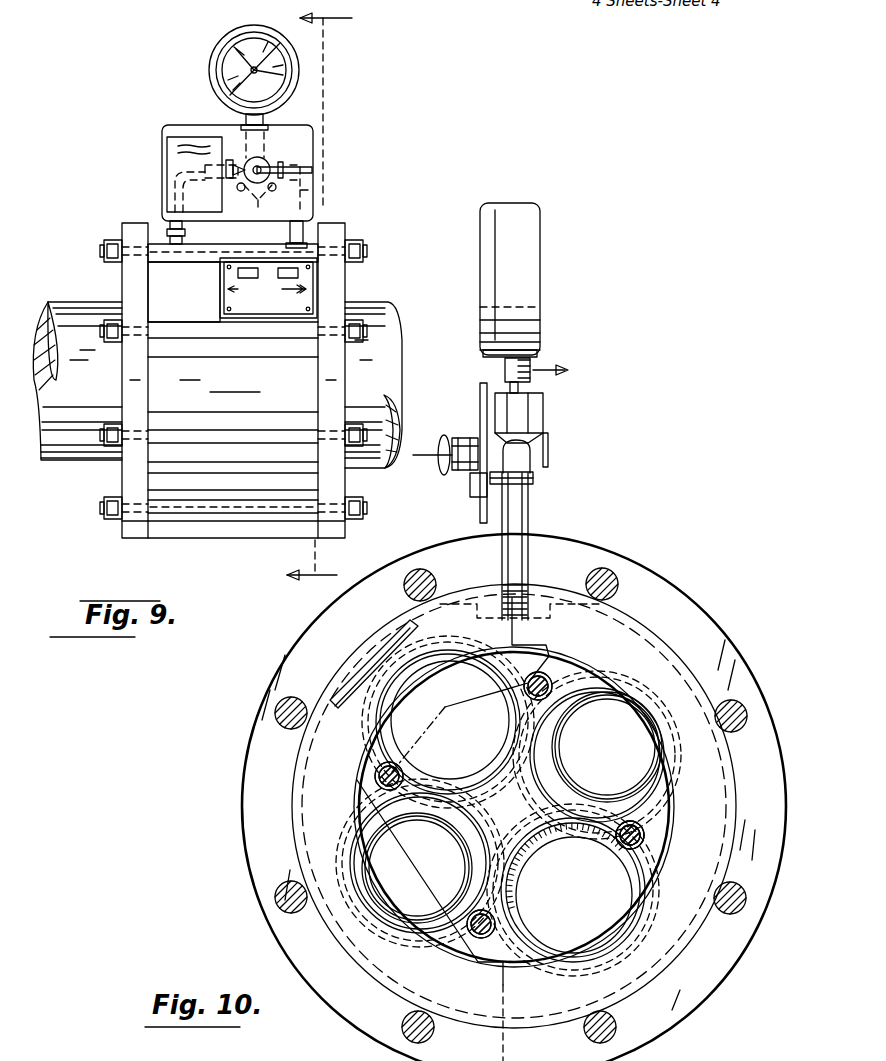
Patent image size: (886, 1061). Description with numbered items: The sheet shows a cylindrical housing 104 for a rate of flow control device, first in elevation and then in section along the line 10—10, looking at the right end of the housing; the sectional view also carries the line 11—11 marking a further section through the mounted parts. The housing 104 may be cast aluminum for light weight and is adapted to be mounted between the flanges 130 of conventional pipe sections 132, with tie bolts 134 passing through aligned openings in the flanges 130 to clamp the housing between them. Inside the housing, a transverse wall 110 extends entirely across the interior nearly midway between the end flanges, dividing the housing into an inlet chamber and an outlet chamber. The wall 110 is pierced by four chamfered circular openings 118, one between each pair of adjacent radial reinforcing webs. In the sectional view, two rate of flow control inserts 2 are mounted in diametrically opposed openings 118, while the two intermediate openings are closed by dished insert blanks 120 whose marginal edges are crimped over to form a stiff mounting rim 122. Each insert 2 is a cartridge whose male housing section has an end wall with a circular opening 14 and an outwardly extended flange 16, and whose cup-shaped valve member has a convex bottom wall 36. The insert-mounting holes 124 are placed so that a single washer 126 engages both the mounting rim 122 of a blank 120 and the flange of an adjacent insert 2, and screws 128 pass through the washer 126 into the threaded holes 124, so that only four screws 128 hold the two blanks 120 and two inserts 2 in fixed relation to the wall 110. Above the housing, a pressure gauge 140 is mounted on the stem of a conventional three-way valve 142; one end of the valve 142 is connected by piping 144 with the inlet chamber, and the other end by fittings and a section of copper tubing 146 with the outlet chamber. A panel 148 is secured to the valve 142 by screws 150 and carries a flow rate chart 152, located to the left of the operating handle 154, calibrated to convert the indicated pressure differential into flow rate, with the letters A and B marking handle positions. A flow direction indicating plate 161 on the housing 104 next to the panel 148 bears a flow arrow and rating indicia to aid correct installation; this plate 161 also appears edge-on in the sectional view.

In FIG. 10, the rate of flow control insert 2 is at (596, 753).
In FIG. 9, the end wall 10 is at (313, 297).
In FIG. 10, the section line 11- 11 is at (474, 711).
In FIG. 10, the circular opening 14 is at (633, 785).
In FIG. 10, the outwardly extended flange 16 is at (560, 680).
In FIG. 10, the convex bottom wall 36 is at (620, 730).
In FIG. 9, the cylindrical housing 104 is at (224, 487).
In FIG. 10, the transverse wall 110 is at (525, 787).
In FIG. 10, the circular openings 118 is at (378, 714).
In FIG. 10, the insert blanks 120 is at (528, 683).
In FIG. 10, the mounting rim 122 is at (500, 812).
In FIG. 10, the insert-mounting holes 124 is at (650, 842).
In FIG. 10, the washer 126 is at (548, 680).
In FIG. 10, the screws 128 is at (524, 686).
In FIG. 9, the flanges 130 is at (130, 292).
In FIG. 10, the flanges 130 is at (283, 680).
In FIG. 9, the pipe sections 132 is at (66, 313).
In FIG. 9, the tie bolts 134 is at (104, 334).
In FIG. 10, the tie bolts 134 is at (618, 585).
In FIG. 9, the pressure gauge 140 is at (210, 69).
In FIG. 10, the pressure gauge 140 is at (532, 283).
In FIG. 9, the 3-way valve 142 is at (243, 138).
In FIG. 10, the 3-way valve 142 is at (545, 414).
In FIG. 9, the piping 144 is at (300, 232).
In FIG. 10, the piping 144 is at (524, 505).
In FIG. 9, the copper tubing 146 is at (168, 222).
In FIG. 9, the panel 148 is at (162, 153).
In FIG. 10, the panel 148 is at (480, 393).
In FIG. 9, the screws 150 is at (262, 196).
In FIG. 10, the screws 150 is at (476, 492).
In FIG. 9, the flow rate chart 152 is at (166, 137).
In FIG. 9, the operating handle 154 is at (262, 168).
In FIG. 10, the operating handle 154 is at (432, 446).
In FIG. 9, the flow direction indicating plate 161 is at (234, 299).
In FIG. 10, the flow direction indicating plate 161 is at (370, 637).